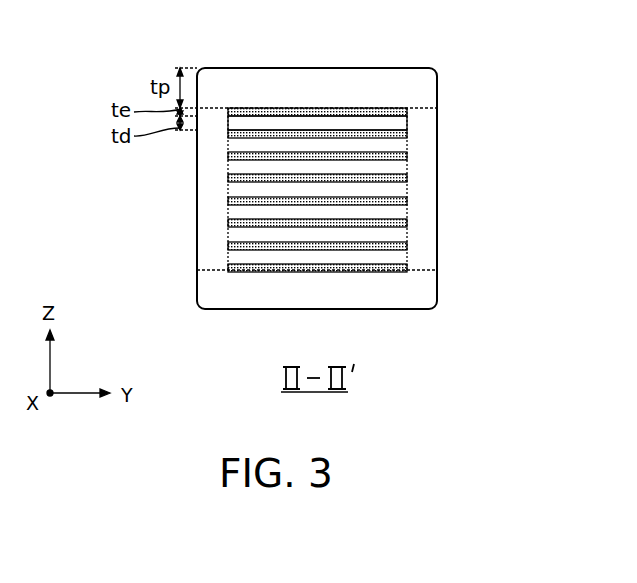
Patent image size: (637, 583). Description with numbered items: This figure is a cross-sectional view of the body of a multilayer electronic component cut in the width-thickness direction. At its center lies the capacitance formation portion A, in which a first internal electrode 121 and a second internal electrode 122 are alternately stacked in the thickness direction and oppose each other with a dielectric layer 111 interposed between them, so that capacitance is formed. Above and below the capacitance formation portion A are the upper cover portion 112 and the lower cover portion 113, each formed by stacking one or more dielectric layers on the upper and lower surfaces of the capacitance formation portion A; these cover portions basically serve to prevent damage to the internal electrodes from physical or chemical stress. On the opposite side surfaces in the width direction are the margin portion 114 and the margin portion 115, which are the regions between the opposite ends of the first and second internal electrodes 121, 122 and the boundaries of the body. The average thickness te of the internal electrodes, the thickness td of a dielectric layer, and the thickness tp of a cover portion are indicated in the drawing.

The upper cover portion 112 is at (324, 86).
The first internal electrode 121 is at (405, 108).
The dielectric layer 111 is at (405, 119).
The second internal electrode 122 is at (405, 132).
The margin portion 115 is at (432, 212).
The lower cover portion 113 is at (432, 290).
The margin portion 114 is at (212, 228).
The capacitance formation portion A is at (227, 192).